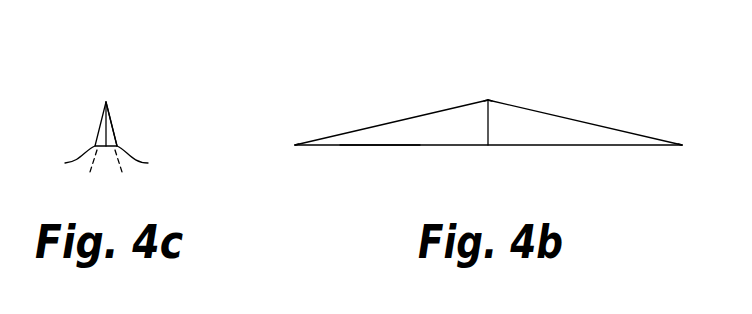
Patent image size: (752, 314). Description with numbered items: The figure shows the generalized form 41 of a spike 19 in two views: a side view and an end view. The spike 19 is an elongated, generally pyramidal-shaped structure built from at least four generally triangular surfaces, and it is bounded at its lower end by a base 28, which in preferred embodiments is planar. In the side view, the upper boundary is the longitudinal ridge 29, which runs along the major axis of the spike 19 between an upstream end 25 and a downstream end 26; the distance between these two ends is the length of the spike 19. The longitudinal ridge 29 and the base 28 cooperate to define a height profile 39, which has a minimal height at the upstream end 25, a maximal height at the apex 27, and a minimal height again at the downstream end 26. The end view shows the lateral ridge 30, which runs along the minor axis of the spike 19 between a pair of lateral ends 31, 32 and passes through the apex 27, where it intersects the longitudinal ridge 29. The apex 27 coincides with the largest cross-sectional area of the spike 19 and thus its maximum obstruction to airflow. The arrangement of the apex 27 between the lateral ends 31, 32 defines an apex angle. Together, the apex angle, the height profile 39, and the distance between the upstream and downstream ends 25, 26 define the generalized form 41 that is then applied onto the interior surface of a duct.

In FIG. 4C, the spike 19 is at (112, 98).
In FIG. 4B, the spike 19 is at (487, 120).
In FIG. 4B, the upstream end 25 is at (295, 145).
In FIG. 4B, the downstream end 26 is at (682, 145).
In FIG. 4C, the apex 27 is at (107, 102).
In FIG. 4B, the apex 27 is at (488, 100).
In FIG. 4B, the base 28 is at (412, 147).
In FIG. 4C, the longitudinal ridge 29 is at (113, 127).
In FIG. 4B, the longitudinal ridge 29 is at (447, 108).
In FIG. 4C, the lateral ridge 30 is at (102, 127).
In FIG. 4B, the lateral ridge 30 is at (490, 123).
In FIG. 4C, the lateral end 31 is at (64, 161).
In FIG. 4C, the lateral end 32 is at (151, 161).
In FIG. 4B, the height profile 39 is at (538, 112).
In FIG. 4B, the generalized form 41 is at (365, 90).